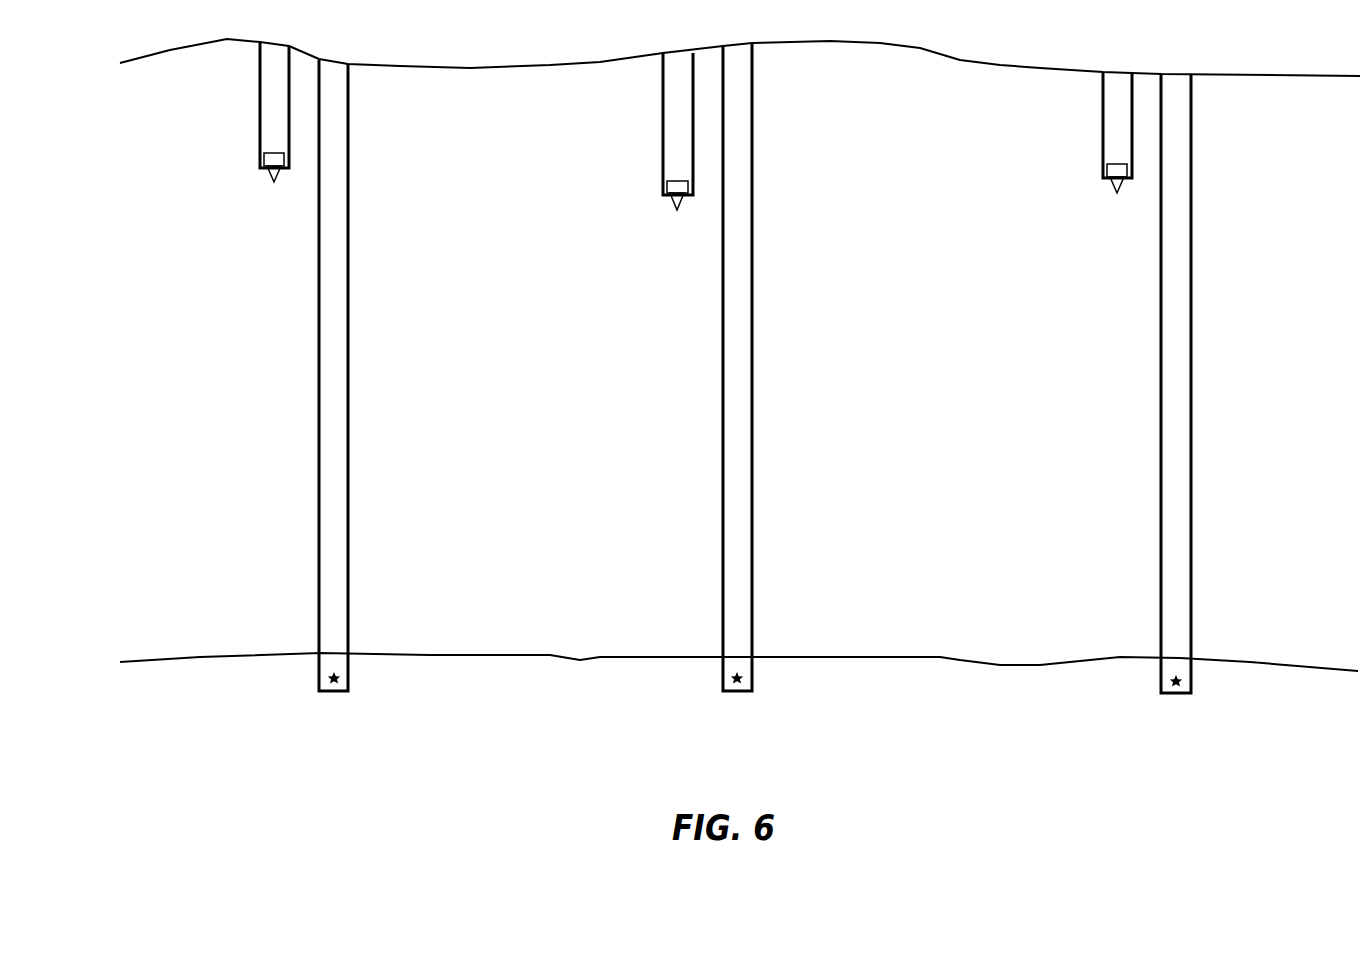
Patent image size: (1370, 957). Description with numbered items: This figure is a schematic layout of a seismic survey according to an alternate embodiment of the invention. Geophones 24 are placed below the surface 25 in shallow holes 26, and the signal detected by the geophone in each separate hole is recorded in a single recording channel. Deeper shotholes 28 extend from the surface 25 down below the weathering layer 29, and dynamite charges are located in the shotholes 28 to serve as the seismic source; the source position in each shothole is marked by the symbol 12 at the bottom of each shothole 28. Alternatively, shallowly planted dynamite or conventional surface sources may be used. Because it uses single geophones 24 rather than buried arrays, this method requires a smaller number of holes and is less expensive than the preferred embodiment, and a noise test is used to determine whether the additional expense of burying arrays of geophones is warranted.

The wellbore / borehole position marker 12 is at (777, 680).
The geophone 24 is at (677, 179).
The surface 25 is at (740, 57).
The shallow hole 26 is at (679, 119).
The shothole 28 is at (773, 368).
The weathering layer 29 is at (739, 656).